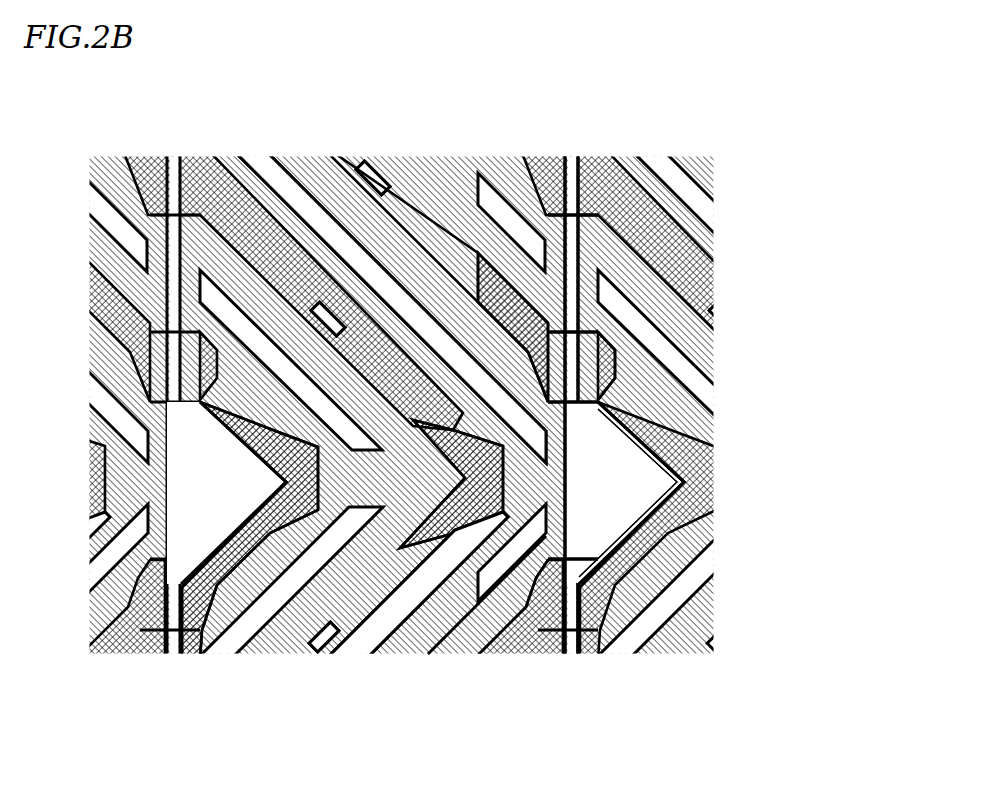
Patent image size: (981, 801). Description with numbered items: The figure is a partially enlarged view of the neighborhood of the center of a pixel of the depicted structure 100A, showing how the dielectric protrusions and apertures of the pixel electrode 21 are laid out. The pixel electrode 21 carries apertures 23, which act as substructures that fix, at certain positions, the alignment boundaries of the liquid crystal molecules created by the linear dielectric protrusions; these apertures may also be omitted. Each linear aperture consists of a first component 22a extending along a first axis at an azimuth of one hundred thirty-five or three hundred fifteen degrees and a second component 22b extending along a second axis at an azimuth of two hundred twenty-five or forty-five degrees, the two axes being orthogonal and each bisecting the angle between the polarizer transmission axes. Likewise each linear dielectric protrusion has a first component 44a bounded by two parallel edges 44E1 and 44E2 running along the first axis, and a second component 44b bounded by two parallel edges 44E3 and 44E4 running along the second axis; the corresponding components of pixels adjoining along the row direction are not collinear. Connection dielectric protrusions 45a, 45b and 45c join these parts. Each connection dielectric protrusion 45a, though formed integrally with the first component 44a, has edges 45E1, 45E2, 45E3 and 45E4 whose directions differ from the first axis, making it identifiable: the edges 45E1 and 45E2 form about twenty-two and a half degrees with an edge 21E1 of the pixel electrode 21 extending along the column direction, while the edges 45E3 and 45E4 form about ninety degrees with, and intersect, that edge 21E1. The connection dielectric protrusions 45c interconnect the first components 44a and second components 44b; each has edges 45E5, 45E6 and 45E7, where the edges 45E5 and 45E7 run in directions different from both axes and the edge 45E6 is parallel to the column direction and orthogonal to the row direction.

The active matrix substrate 100A is at (712, 113).
The pixel electrode 21 is at (241, 185).
The edge of the pixel electrode 21E1 is at (600, 480).
The first component of the linear aperture 22a is at (306, 205).
The second component of the linear aperture 22b is at (210, 590).
The aperture 23 is at (322, 318).
The first component of the linear dielectric protrusion 44a is at (392, 248).
The second component of the linear dielectric protrusion 44b is at (388, 645).
The edge of the first component 44E1 is at (372, 162).
The edge of the first component 44E2 is at (470, 195).
The edge of the second component 44E3 is at (318, 638).
The edge of the second component 44E4 is at (432, 640).
The connection dielectric protrusion 45a is at (574, 210).
The connection dielectric protrusion 45b is at (600, 560).
The connection dielectric protrusion 45c is at (492, 620).
The edge of the connection dielectric protrusion 45E1 is at (600, 440).
The edge of the connection dielectric protrusion 45E2 is at (600, 352).
The edge of the connection dielectric protrusion 45E3 is at (600, 300).
The edge of the connection dielectric protrusion 45E4 is at (600, 410).
The edge of the connection dielectric protrusion 45E5 is at (530, 562).
The edge of the connection dielectric protrusion 45E6 is at (553, 578).
The edge of the connection dielectric protrusion 45E7 is at (578, 600).